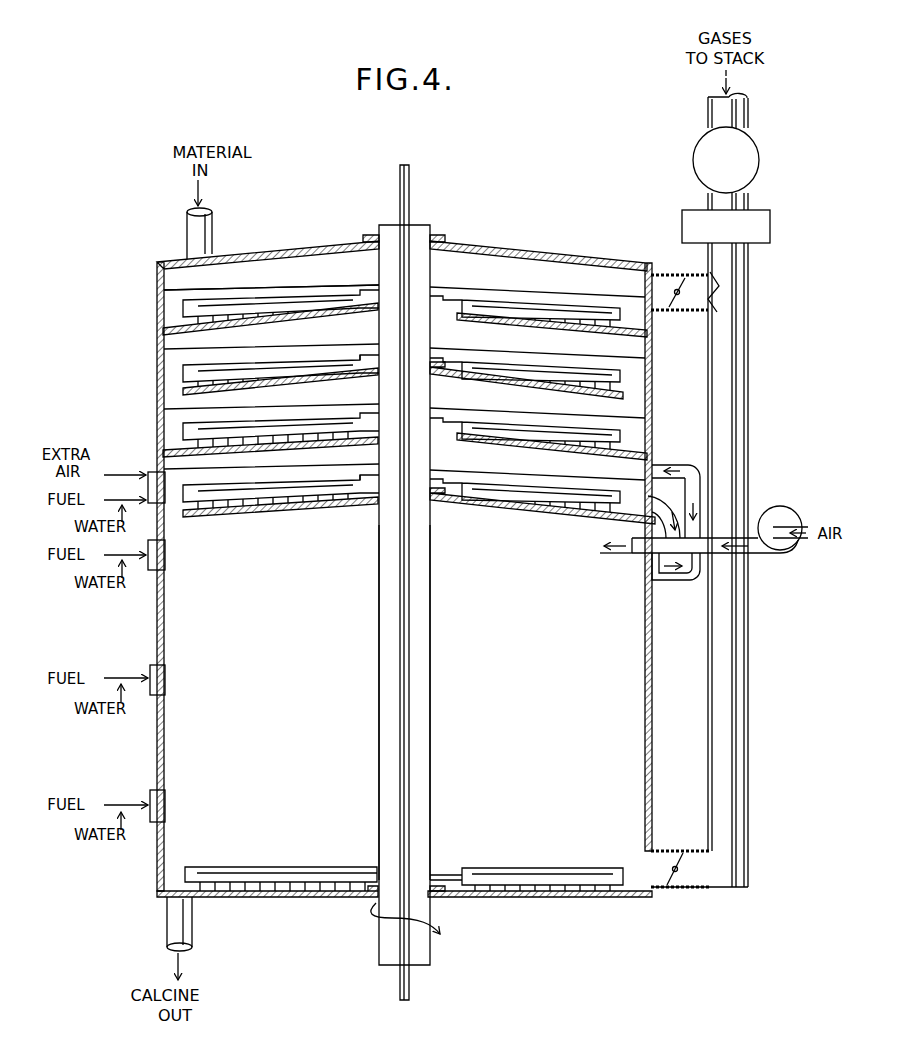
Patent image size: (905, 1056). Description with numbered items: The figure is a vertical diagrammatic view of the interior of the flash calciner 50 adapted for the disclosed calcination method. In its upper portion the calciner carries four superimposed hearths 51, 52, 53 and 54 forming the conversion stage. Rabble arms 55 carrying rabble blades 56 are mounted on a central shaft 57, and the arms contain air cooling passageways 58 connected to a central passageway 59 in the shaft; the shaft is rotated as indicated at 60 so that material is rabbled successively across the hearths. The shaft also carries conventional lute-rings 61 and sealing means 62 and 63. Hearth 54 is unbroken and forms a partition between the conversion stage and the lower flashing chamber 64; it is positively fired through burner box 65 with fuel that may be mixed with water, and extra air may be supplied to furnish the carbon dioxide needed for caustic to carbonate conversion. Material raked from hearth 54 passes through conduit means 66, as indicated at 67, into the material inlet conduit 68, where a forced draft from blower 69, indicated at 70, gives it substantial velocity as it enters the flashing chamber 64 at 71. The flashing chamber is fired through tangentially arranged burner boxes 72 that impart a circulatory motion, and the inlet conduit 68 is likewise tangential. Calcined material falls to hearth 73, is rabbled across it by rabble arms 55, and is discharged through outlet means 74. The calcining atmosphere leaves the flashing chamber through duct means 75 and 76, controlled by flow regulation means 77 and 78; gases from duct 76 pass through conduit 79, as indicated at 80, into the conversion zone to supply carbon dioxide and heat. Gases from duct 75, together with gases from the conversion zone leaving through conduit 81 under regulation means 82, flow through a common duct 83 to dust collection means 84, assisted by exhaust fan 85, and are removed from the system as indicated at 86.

The flash calciner 50 is at (347, 241).
The hearth 51 is at (163, 330).
The hearth 52 is at (165, 397).
The hearth 53 is at (190, 455).
The hearth 54 is at (192, 518).
The rabble arm 55 is at (198, 310).
The rabble blade 56 is at (226, 325).
The central shaft 57 is at (390, 240).
The air cooling passageway 58 is at (255, 298).
The central passageway 59 is at (410, 178).
The rotation of central shaft 60 is at (389, 924).
The lute-ring 61 is at (372, 358).
The sealing means 62 is at (440, 237).
The sealing means 63 is at (372, 873).
The flashing chamber 64 is at (327, 673).
The burner box 65 is at (148, 489).
The conduit means 66 is at (664, 509).
The raking out of material 67 is at (640, 522).
The material inlet conduit 68 is at (630, 558).
The blower 69 is at (790, 549).
The forced draft 70 is at (746, 554).
The material introduction to flashing chamber 71 is at (630, 545).
The burner box 72 is at (165, 556).
The hearth 73 is at (226, 898).
The outlet means 74 is at (170, 950).
The duct means 75 is at (658, 889).
The duct means 76 is at (668, 582).
The flow regulation means 77 is at (676, 850).
The flow regulation means 78 is at (697, 512).
The conduit 79 is at (660, 464).
The delivery of gases to conversion zone 80 is at (700, 473).
The conduit 81 is at (667, 311).
The regulation means 82 is at (677, 279).
The common duct 83 is at (749, 692).
The dust collection means 84 is at (771, 225).
The exhaust fan 85 is at (745, 152).
The gas removal from system 86 is at (735, 96).